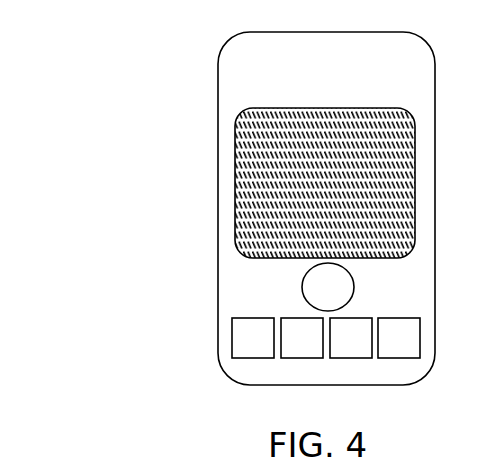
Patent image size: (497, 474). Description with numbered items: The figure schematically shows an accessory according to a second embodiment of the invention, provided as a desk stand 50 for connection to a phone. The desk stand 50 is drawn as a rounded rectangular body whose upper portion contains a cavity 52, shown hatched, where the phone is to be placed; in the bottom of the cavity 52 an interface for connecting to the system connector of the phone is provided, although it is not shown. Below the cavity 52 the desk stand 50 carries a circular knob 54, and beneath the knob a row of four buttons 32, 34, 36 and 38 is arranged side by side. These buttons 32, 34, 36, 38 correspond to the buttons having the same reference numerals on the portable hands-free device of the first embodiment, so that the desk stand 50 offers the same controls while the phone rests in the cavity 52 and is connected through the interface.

The desk stand 50 is at (197, 144).
The cavity 52 is at (260, 197).
The circular knob 54 is at (328, 287).
The button 32 is at (253, 338).
The button 34 is at (302, 338).
The button 36 is at (351, 338).
The button 38 is at (399, 338).